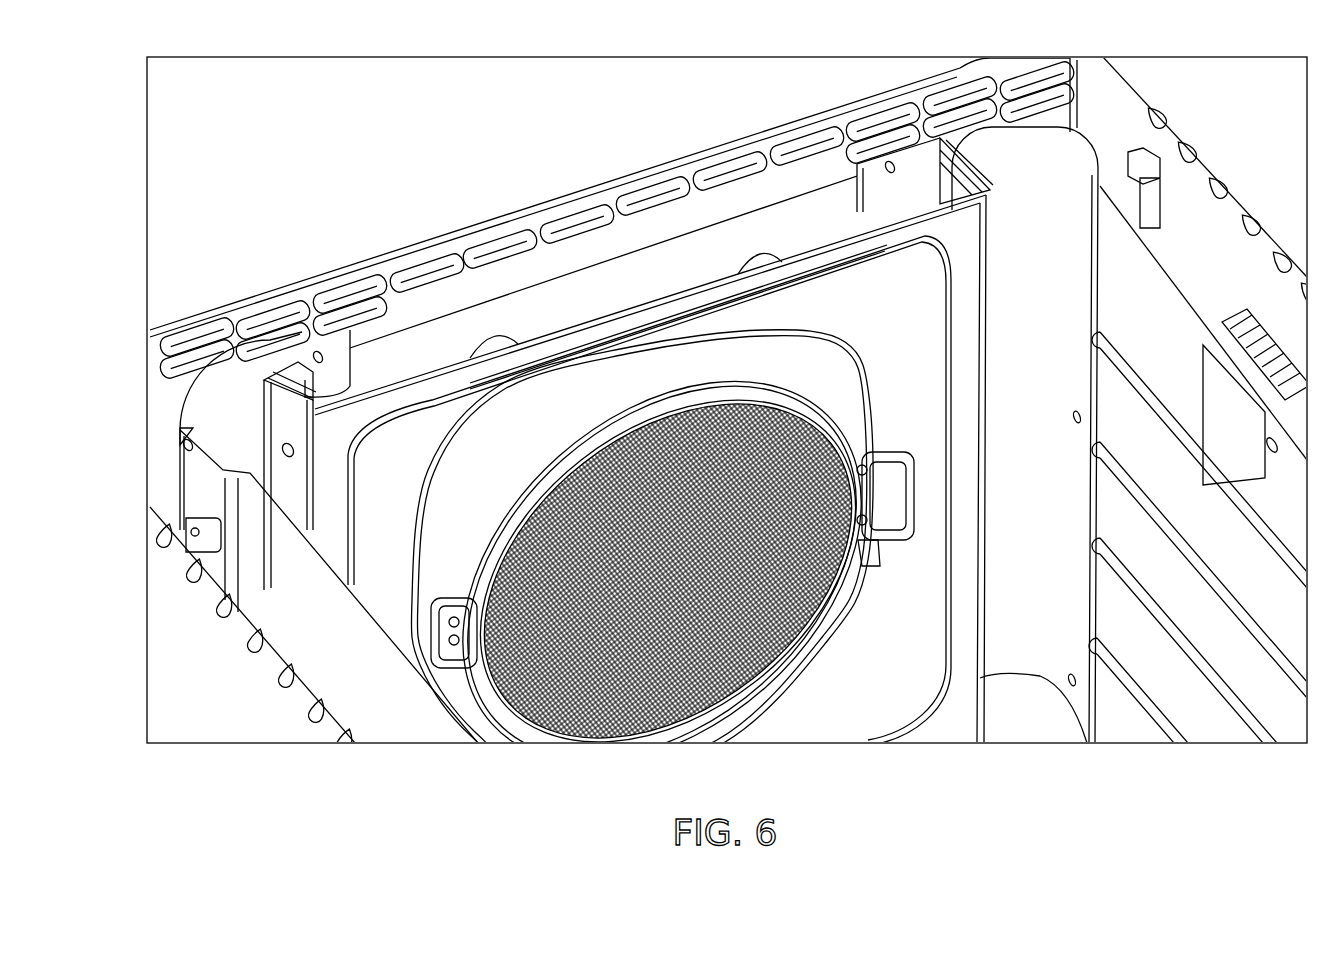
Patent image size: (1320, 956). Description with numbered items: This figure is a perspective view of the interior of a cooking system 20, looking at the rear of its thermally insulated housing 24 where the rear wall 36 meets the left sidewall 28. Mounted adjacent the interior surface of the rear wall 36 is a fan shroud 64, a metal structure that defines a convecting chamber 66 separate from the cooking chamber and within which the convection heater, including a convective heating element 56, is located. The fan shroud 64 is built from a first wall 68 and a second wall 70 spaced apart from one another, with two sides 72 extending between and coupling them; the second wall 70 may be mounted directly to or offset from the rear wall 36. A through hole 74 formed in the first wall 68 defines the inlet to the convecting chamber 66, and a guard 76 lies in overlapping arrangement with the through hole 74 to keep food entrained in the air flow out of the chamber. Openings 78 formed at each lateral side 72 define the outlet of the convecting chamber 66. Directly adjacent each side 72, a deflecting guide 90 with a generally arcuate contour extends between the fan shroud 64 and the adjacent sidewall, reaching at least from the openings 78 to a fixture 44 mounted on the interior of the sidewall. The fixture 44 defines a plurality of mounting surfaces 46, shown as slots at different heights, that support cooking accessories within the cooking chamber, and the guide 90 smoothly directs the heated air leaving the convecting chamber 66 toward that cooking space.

The cooking system 20 is at (130, 150).
The housing 24 is at (150, 320).
The left sidewall 28 is at (157, 652).
The rear wall 36 is at (912, 92).
The fixture 44 is at (1250, 247).
The mounting surfaces 46 is at (1125, 352).
The convective heating element 56 is at (433, 348).
The fan shroud 64 is at (806, 257).
The convecting chamber 66 is at (723, 233).
The first wall 68 is at (558, 343).
The second wall 70 is at (305, 355).
The sides 72 is at (297, 398).
The through hole 74 is at (657, 393).
The guard 76 is at (490, 687).
The openings 78 is at (283, 487).
The guide 90 is at (190, 421).